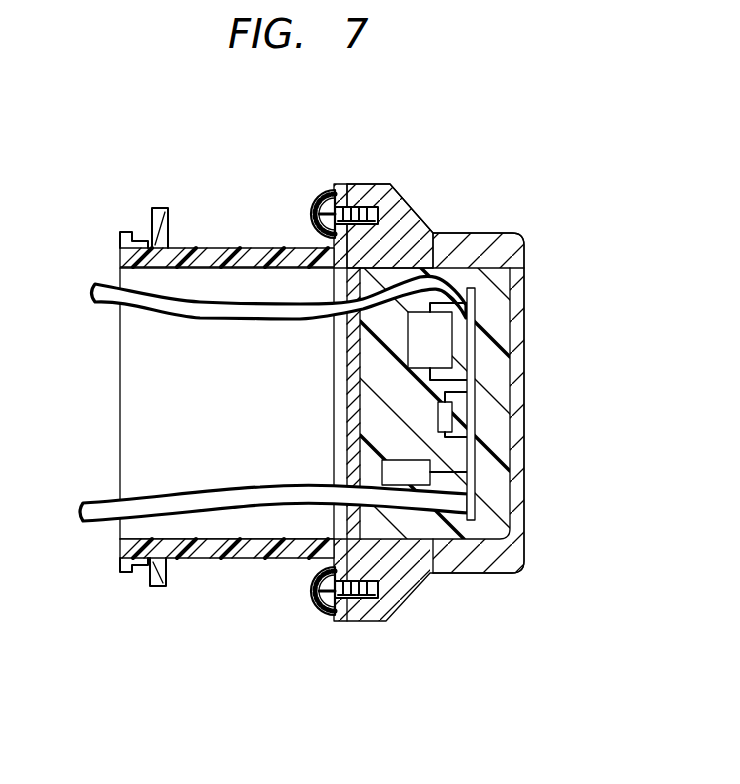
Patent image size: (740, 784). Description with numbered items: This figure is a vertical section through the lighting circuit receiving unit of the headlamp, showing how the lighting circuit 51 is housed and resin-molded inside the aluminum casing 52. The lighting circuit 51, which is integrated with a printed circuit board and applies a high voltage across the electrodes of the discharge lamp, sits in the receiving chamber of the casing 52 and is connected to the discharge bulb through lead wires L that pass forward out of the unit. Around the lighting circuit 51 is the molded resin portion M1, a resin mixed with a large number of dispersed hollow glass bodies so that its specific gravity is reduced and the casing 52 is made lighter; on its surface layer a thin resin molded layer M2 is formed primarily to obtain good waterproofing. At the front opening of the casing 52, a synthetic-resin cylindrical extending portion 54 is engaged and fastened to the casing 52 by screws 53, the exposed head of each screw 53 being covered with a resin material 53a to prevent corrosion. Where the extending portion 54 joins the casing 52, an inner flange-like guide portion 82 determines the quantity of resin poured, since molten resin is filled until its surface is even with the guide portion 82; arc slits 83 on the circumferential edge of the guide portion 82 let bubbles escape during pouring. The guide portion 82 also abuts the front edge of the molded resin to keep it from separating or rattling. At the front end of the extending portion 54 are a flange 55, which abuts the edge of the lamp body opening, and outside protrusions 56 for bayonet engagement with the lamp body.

The lighting circuit 51 is at (482, 375).
The casing 52 is at (525, 272).
The screws 53 is at (319, 400).
The resin material 53a is at (314, 199).
The cylindrical extending portion 54 is at (200, 248).
The flange 55 is at (153, 208).
The outside protrusions 56 is at (122, 237).
The guide portion 82 is at (313, 318).
The arc slits 83 is at (298, 248).
The lead wires L is at (253, 303).
The molded resin portion M1 is at (496, 273).
The resin molded layer M2 is at (418, 232).